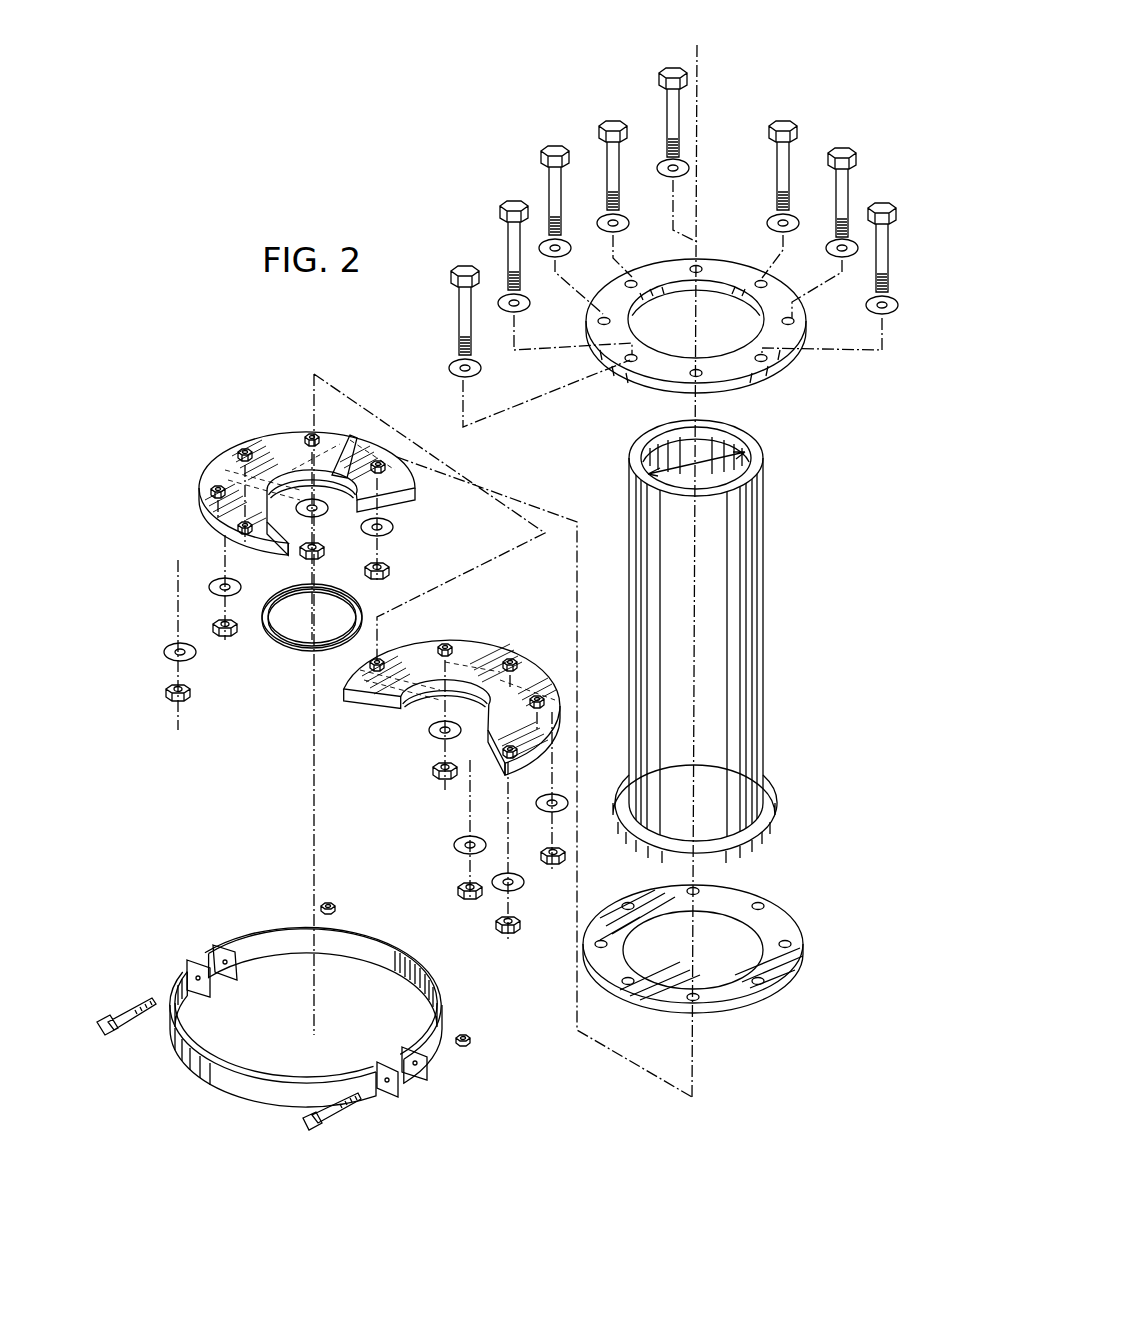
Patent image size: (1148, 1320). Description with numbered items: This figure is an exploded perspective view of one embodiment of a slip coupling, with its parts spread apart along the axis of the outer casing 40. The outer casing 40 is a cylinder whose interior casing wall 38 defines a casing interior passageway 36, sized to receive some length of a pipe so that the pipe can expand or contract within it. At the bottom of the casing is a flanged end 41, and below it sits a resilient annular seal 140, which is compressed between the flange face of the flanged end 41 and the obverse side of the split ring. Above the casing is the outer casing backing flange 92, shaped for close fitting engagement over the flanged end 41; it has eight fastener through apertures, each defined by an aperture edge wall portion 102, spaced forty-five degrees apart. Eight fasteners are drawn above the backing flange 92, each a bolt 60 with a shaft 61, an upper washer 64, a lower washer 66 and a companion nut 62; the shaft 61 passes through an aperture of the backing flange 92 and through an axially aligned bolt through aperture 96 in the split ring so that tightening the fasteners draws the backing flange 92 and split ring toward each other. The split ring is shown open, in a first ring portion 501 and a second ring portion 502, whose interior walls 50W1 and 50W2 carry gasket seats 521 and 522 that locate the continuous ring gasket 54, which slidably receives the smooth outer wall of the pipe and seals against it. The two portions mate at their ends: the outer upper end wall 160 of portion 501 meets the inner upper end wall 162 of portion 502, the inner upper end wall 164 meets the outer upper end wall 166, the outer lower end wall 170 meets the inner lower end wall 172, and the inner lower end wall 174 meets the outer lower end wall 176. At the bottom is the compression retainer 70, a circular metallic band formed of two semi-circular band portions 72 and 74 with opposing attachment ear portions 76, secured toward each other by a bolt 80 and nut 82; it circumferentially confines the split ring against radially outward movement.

The casing interior passageway 36 is at (696, 462).
The interior casing wall 38 is at (708, 442).
The outer casing 40 is at (766, 600).
The flanged end 41 is at (778, 812).
The interior wall of first ring portion 50W1 is at (430, 712).
The interior wall of second ring portion 50W2 is at (296, 462).
The first ring portion 501 is at (425, 695).
The second ring portion 502 is at (312, 464).
The gasket seat 521 is at (470, 690).
The gasket seat 522 is at (380, 502).
The gasket 54 is at (292, 646).
The bolt 60 is at (674, 169).
The shaft 61 is at (673, 222).
The nut 62 is at (351, 746).
The upper washer 64 is at (690, 254).
The lower washer 66 is at (349, 707).
The compression retainer 70 is at (306, 1033).
The semi-circular metallic band portion 72 is at (237, 1093).
The semi-circular metallic band portion 74 is at (355, 950).
The attachment ear portion 76 is at (317, 1008).
The bolt 80 is at (232, 1075).
The nut 82 is at (418, 970).
The outer casing backing flange 92 is at (752, 388).
The bolt through aperture 96 is at (378, 438).
The aperture edge wall portion 102 is at (704, 301).
The annular seal 140 is at (775, 908).
The outer upper end wall 160 is at (356, 695).
The inner upper end wall 162 is at (352, 436).
The inner upper end wall 164 is at (548, 734).
The outer upper end wall 166 is at (280, 552).
The outer lower end wall 170 is at (488, 766).
The inner lower end wall 172 is at (212, 533).
The inner lower end wall 174 is at (372, 712).
The outer lower end wall 176 is at (400, 490).